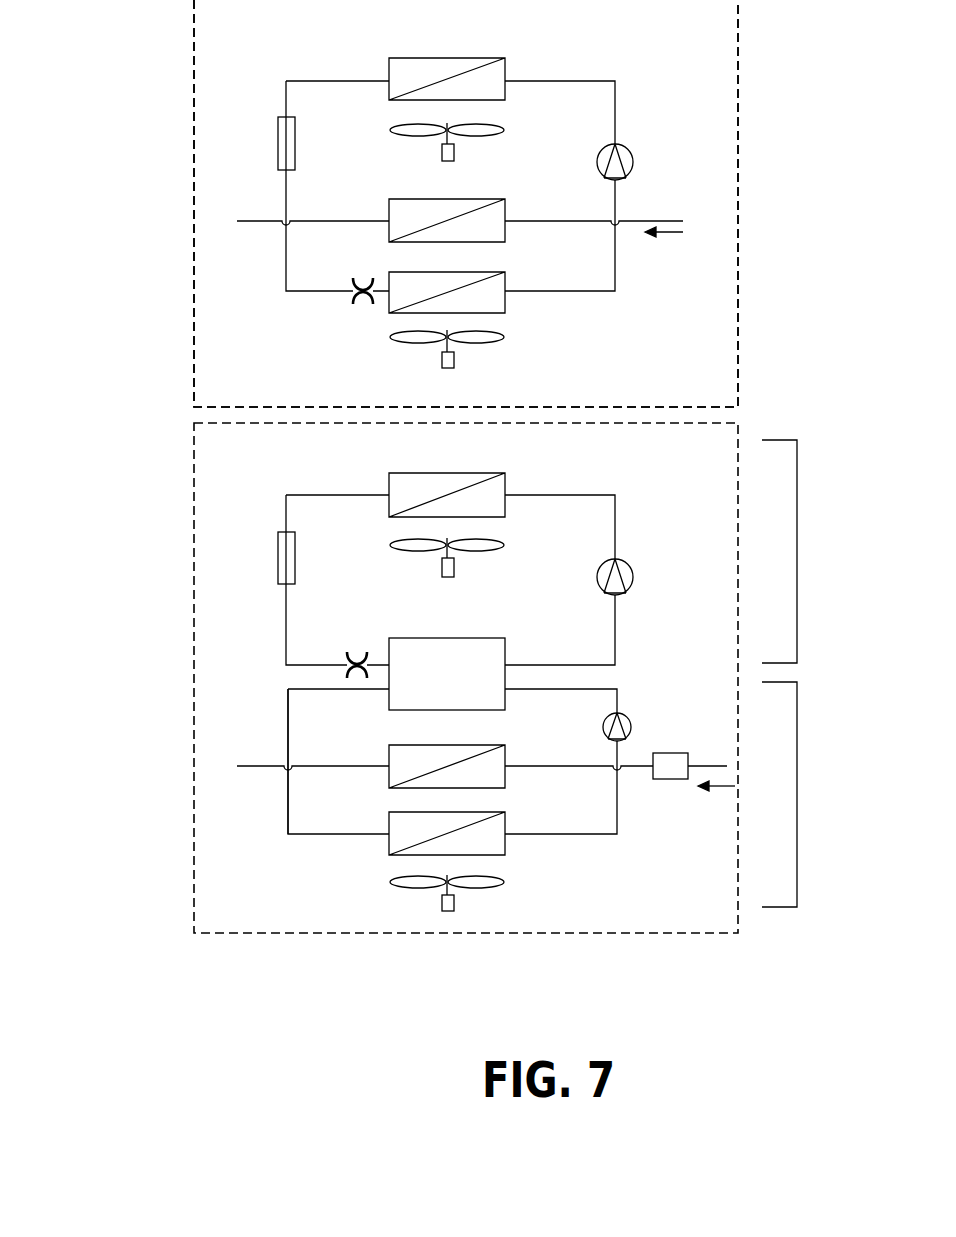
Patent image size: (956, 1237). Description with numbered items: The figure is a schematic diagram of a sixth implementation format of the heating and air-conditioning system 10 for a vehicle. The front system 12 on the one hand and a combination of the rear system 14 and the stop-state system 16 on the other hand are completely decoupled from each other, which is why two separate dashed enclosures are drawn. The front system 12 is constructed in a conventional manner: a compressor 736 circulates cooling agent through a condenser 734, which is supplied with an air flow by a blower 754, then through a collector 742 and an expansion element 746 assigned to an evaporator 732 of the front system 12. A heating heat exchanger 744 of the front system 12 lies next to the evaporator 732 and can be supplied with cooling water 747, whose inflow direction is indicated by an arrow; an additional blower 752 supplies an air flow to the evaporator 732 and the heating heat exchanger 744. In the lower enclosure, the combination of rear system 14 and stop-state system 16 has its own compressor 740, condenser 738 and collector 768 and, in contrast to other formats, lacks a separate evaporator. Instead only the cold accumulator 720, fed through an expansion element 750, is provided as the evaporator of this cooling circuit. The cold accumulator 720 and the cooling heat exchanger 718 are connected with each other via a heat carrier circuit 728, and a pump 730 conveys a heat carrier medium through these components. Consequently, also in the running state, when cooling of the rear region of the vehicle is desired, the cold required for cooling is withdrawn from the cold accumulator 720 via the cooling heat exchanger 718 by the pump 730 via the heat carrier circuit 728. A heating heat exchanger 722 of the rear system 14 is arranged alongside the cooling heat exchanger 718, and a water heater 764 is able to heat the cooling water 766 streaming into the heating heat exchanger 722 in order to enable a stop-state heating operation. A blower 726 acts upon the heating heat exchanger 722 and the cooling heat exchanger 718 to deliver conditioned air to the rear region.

The heating and air-conditioning system 10 is at (168, 63).
The front system 12 is at (738, 162).
The rear system 14 is at (797, 535).
The stop-state system 16 is at (797, 795).
The cooling heat exchanger 718 is at (505, 830).
The cold accumulator 720 is at (505, 655).
The heating heat exchanger 722 is at (505, 755).
The blower 726 is at (454, 905).
The heat carrier circuit 728 is at (288, 810).
The pump 730 is at (628, 717).
The evaporator 732 is at (505, 300).
The condenser 734 is at (463, 58).
The compressor 736 is at (629, 152).
The condenser 738 is at (463, 473).
The compressor 740 is at (629, 567).
The collector 742 is at (278, 141).
The heating heat exchanger 744 is at (410, 199).
The expansion element 746 is at (360, 304).
The cooling water 747 is at (670, 232).
The expansion element 750 is at (357, 652).
The blower 752 is at (454, 360).
The blower 754 is at (454, 152).
The water heater 764 is at (670, 779).
The cooling water 766 is at (722, 786).
The collector 768 is at (278, 553).